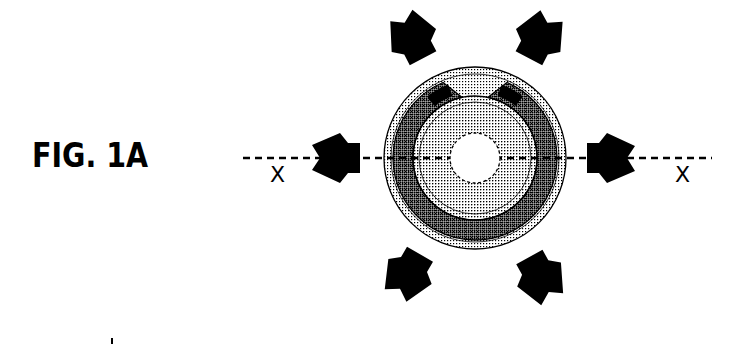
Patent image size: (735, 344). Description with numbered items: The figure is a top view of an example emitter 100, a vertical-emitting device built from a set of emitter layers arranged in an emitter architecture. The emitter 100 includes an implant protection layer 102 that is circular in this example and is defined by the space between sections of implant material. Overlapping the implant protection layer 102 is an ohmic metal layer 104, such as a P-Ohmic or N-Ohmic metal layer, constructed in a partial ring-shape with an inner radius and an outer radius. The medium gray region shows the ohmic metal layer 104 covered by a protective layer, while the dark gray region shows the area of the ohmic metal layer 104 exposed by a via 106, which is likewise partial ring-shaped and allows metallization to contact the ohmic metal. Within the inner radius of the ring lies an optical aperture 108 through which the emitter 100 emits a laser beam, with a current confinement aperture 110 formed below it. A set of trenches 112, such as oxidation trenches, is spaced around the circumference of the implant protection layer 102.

The emitter 100 is at (262, 50).
The implant protection layer 102 is at (558, 120).
The ohmic metal layer 104 is at (524, 88).
The via 106 is at (537, 199).
The optical aperture 108 is at (494, 213).
The current confinement aperture 110 is at (475, 153).
The trenches 112 is at (566, 287).